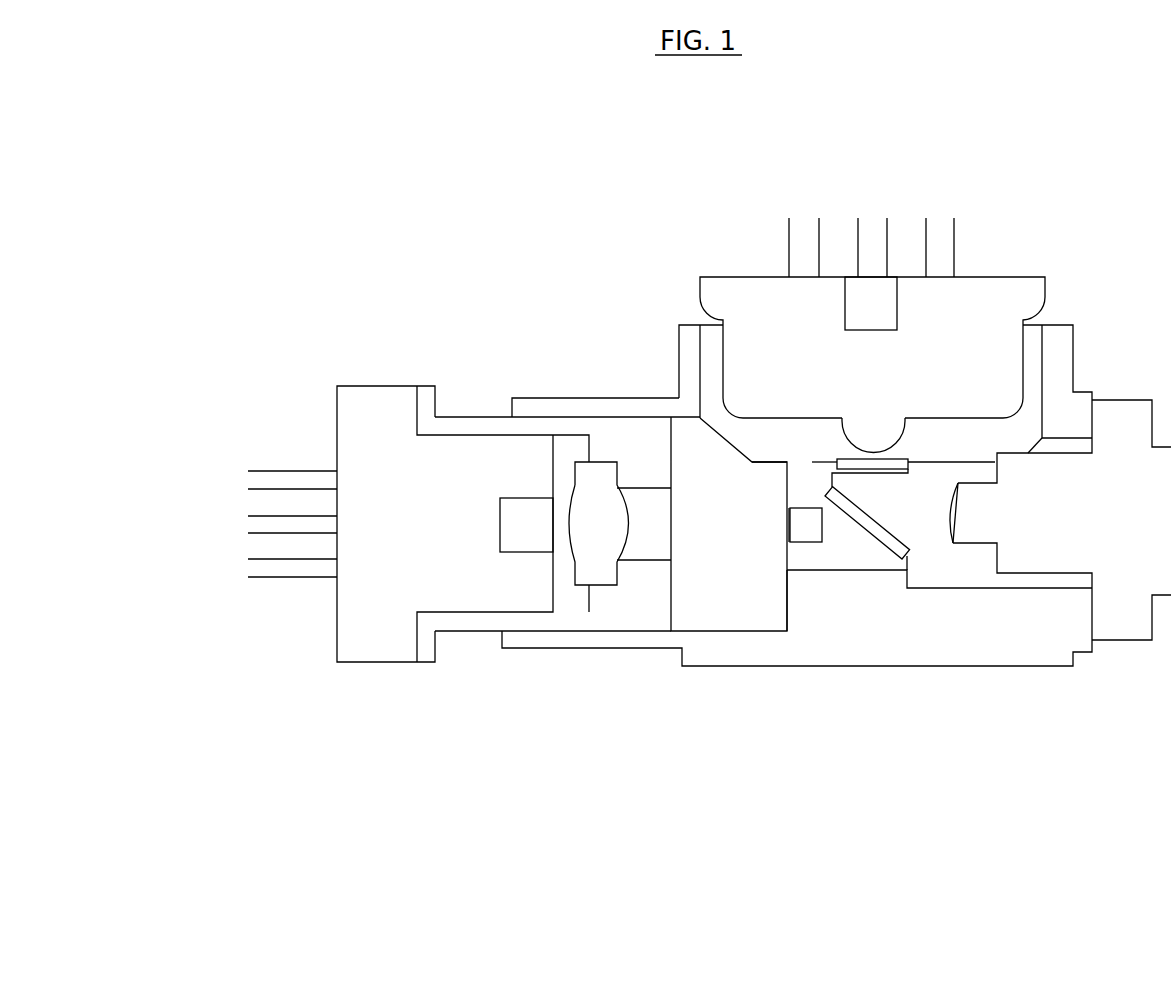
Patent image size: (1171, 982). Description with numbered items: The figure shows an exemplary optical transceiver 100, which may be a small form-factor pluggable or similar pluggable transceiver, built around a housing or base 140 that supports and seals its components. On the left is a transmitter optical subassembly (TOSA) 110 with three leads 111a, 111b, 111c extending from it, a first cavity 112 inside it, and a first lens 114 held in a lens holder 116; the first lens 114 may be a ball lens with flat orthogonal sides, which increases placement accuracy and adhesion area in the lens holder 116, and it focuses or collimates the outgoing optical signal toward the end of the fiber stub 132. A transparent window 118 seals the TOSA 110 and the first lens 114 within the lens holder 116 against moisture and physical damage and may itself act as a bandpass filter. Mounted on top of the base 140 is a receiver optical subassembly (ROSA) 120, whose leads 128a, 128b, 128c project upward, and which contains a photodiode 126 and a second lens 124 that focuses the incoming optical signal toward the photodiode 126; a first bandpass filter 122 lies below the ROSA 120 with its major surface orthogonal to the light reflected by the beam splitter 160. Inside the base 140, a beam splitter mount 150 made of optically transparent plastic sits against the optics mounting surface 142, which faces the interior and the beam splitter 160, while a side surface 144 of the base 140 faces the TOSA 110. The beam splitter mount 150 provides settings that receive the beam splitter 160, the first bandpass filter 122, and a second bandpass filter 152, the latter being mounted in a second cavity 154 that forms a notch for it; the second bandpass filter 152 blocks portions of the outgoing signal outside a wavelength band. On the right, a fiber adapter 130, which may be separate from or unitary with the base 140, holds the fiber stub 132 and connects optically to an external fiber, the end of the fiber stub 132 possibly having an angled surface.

The optical transceiver 100 is at (548, 205).
The transmitter optical subassembly (TOSA) 110 is at (377, 650).
The lead 111a is at (274, 475).
The lead 111b is at (262, 522).
The lead 111c is at (273, 569).
The first cavity 112 is at (503, 523).
The first lens 114 is at (607, 578).
The lens holder 116 is at (633, 436).
The transparent window 118 is at (674, 530).
The receiver optical subassembly (ROSA) 120 is at (975, 307).
The first bandpass filter 122 is at (902, 460).
The second lens 124 is at (873, 437).
The photodiode 126 is at (852, 307).
The lead 128a is at (793, 227).
The lead 128b is at (880, 229).
The lead 128c is at (950, 231).
The fiber adapter 130 is at (1131, 528).
The fiber stub 132 is at (967, 505).
The base 140 is at (685, 350).
The optics mounting surface 142 is at (843, 572).
The side surface 144 is at (787, 589).
The beam splitter mount 150 is at (798, 483).
The second bandpass filter 152 is at (787, 518).
The second cavity 154 is at (815, 513).
The beam splitter 160 is at (887, 532).